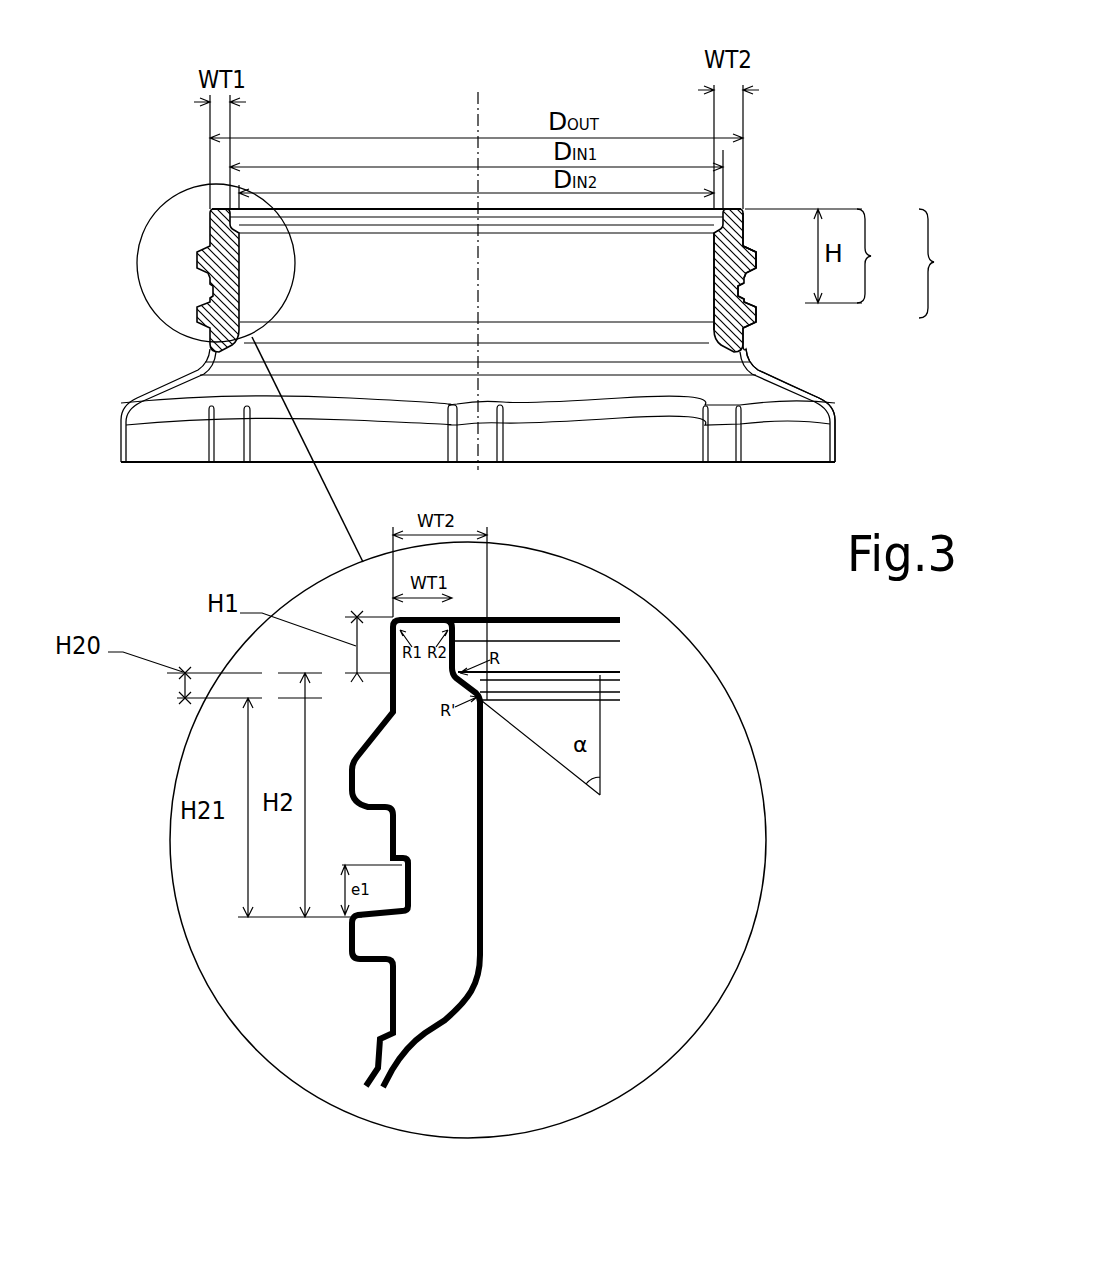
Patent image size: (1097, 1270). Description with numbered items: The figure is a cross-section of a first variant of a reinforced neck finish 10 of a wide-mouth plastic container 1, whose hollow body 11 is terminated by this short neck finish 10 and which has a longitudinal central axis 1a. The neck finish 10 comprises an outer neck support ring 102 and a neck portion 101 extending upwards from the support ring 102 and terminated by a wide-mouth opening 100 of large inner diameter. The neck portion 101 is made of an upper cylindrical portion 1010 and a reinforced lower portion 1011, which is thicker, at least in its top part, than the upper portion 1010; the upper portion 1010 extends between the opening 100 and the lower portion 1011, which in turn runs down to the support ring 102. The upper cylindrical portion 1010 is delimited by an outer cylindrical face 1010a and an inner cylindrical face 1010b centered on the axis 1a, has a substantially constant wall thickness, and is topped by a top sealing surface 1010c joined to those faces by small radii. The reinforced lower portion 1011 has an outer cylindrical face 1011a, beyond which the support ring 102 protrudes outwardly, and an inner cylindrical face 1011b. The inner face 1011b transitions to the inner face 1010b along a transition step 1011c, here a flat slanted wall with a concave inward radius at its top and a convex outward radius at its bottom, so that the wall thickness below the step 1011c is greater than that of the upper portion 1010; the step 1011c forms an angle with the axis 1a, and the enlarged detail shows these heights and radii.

The wide-mouth plastic container 1 is at (146, 82).
The longitudinal central axis 1a is at (478, 98).
The neck finish 10 is at (945, 263).
The wide-mouth opening 100 is at (716, 198).
The neck portion 101 is at (884, 256).
The outer neck support ring 102 is at (757, 323).
The upper cylindrical portion 1010 is at (742, 209).
The outer cylindrical face 1010a is at (742, 228).
The inner cylindrical face 1010b is at (718, 214).
The top sealing surface 1010c is at (216, 207).
The reinforced lower portion 1011 is at (752, 270).
The outer cylindrical face 1011a is at (750, 291).
The inner cylindrical face 1011b is at (714, 276).
The transition step 1011c is at (714, 233).
The hollow body 11 is at (830, 423).